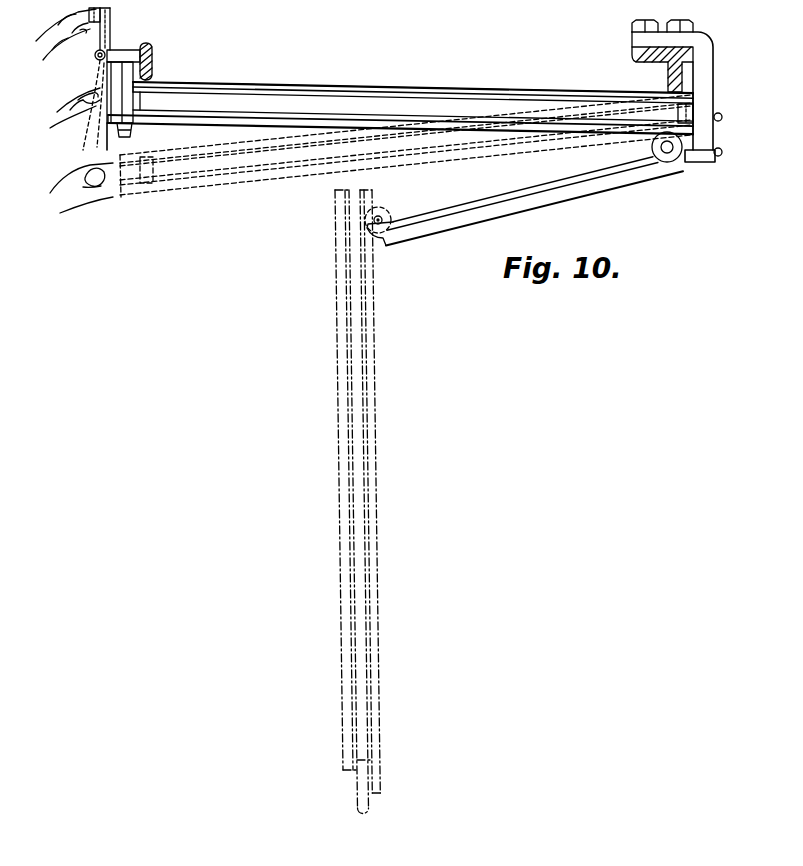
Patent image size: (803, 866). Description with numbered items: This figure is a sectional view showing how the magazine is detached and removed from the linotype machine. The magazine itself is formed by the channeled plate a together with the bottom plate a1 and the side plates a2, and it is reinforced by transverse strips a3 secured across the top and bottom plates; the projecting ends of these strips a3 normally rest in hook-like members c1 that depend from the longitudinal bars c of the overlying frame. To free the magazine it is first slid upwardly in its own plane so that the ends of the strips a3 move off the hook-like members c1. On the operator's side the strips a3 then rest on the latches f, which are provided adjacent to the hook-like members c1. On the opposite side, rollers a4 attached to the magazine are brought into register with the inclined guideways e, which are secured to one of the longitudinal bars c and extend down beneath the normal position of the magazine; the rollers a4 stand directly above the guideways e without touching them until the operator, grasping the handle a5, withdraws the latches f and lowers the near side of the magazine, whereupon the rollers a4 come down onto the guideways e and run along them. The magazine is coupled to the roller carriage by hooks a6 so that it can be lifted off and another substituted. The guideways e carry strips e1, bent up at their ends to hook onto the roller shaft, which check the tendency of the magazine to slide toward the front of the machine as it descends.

The plate a is at (290, 94).
The bottom plate a1 is at (408, 120).
The side plates a2 is at (355, 109).
The transverse strips a3 is at (523, 96).
The rollers a4 is at (671, 153).
The handle a5 is at (98, 117).
The hooks a6 is at (374, 210).
The longitudinal bars c is at (152, 58).
The hook-like members c1 is at (738, 160).
The inclined guideways e is at (430, 228).
The strips e1 is at (480, 202).
The latches f is at (111, 12).